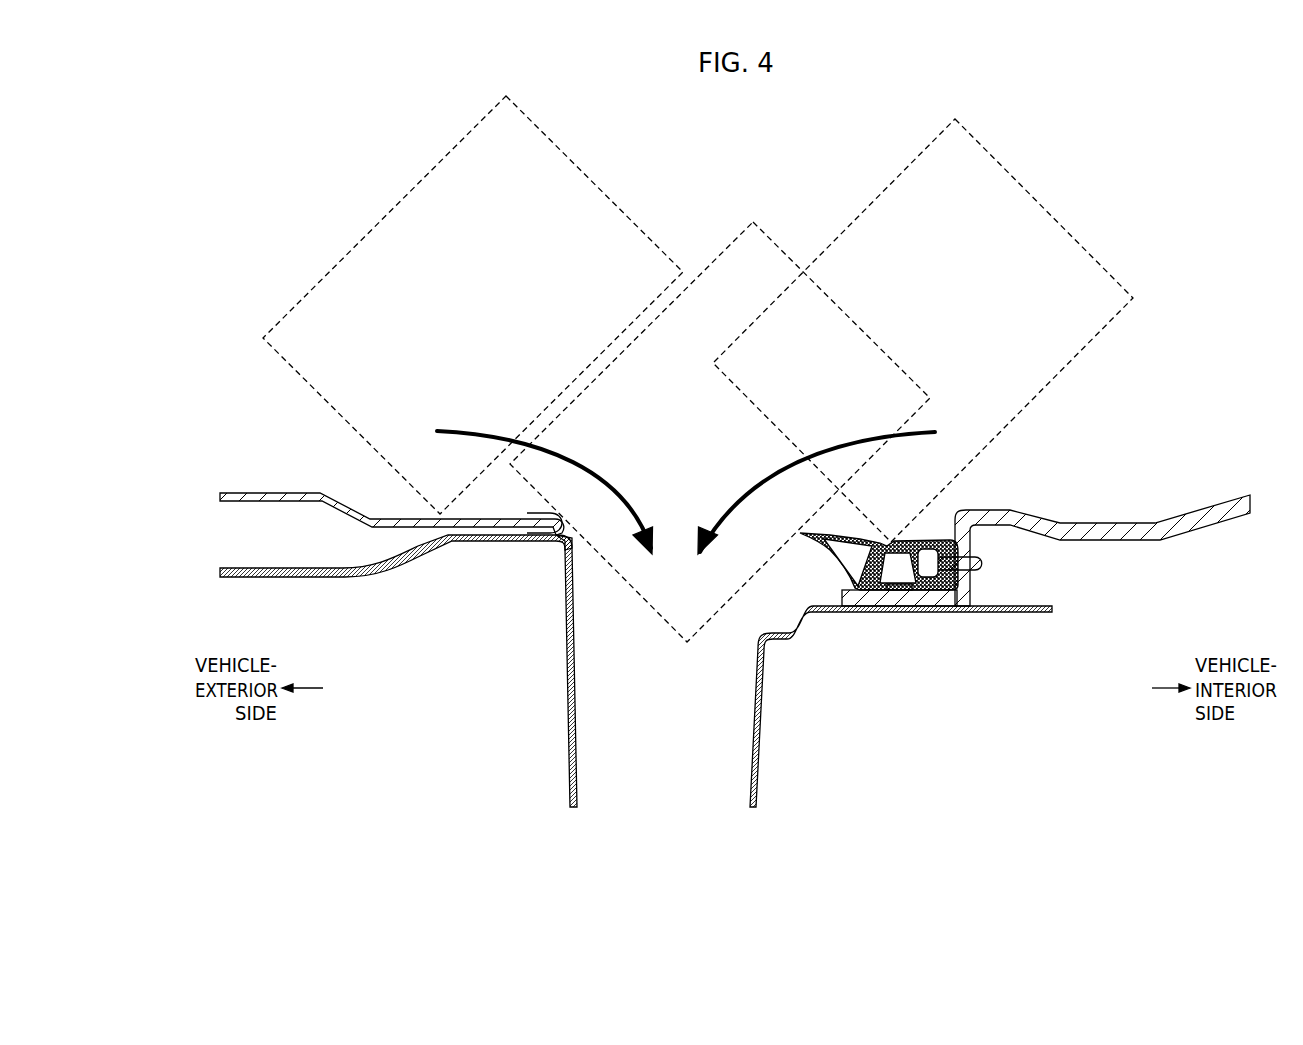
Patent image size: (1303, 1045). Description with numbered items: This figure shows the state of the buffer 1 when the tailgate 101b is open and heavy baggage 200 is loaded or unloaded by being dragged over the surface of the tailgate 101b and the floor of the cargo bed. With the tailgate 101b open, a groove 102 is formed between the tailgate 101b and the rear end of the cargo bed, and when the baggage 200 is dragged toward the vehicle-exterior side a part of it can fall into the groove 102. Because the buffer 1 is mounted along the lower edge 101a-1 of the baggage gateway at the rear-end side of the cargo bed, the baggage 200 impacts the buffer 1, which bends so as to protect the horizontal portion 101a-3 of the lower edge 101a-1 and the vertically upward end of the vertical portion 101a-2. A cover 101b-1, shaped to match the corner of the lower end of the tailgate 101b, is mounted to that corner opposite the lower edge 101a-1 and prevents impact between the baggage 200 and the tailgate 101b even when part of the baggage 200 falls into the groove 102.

The baggage 200 is at (377, 222).
The buffer 1 is at (825, 567).
The tailgate 101b is at (525, 632).
The cover 101b-1 is at (573, 542).
The lower edge 101a-1 is at (1047, 665).
The vertical portion 101a-2 is at (972, 580).
The horizontal portion 101a-3 is at (916, 603).
The groove 102 is at (683, 770).